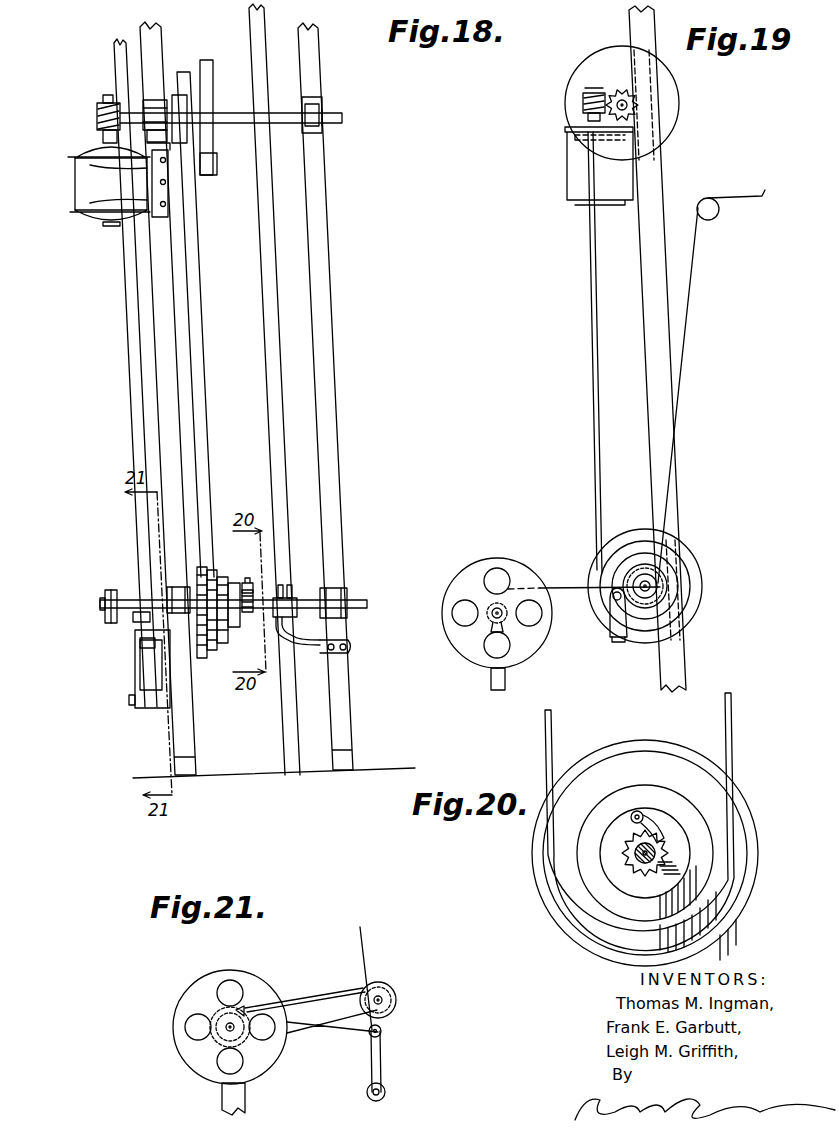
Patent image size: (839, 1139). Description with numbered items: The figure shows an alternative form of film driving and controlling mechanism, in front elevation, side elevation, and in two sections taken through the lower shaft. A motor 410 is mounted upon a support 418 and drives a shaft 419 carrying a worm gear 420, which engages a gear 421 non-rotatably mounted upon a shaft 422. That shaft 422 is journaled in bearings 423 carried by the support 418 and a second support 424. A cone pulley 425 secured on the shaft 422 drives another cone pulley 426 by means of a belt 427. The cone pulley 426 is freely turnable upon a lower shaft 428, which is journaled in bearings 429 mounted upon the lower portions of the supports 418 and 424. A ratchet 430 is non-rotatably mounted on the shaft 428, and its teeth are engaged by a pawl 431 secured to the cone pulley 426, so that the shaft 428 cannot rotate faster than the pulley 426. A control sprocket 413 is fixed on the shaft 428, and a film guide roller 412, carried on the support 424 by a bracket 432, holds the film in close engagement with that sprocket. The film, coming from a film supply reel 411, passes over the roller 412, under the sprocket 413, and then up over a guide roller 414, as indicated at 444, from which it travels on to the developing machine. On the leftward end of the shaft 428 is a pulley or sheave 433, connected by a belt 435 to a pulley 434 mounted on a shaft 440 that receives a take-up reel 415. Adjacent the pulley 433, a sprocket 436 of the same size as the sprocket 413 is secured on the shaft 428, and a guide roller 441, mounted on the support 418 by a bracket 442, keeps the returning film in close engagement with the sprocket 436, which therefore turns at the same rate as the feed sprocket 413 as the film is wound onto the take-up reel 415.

In FIG. 18, the motor 410 is at (93, 182).
In FIG. 19, the film supply reel 411 is at (521, 572).
In FIG. 18, the film guide roller 412 is at (290, 600).
In FIG. 19, the film guide roller 412 is at (608, 600).
In FIG. 19, the control sprocket 413 is at (660, 587).
In FIG. 19, the film guide roller 414 is at (713, 216).
In FIG. 21, the take-up reel 415 is at (185, 1040).
In FIG. 18, the support 418 is at (152, 42).
In FIG. 19, the support 418 is at (640, 36).
In FIG. 18, the shaft 419 is at (102, 137).
In FIG. 18, the worm gear 420 is at (100, 118).
In FIG. 19, the worm gear 420 is at (582, 98).
In FIG. 18, the gear 421 is at (105, 98).
In FIG. 19, the gear 421 is at (608, 62).
In FIG. 18, the shaft 422 is at (345, 116).
In FIG. 19, the shaft 422 is at (628, 103).
In FIG. 18, the bearings 423 is at (156, 116).
In FIG. 18, the support 424 is at (322, 42).
In FIG. 18, the cone pulley 425 is at (212, 160).
In FIG. 19, the cone pulley 425 is at (664, 120).
In FIG. 18, the cone pulley 426 is at (198, 578).
In FIG. 19, the cone pulley 426 is at (700, 569).
In FIG. 20, the cone pulley 426 is at (753, 833).
In FIG. 18, the belt 427 is at (200, 430).
In FIG. 19, the belt 427 is at (595, 497).
In FIG. 20, the belt 427 is at (730, 735).
In FIG. 18, the shaft 428 is at (350, 602).
In FIG. 20, the shaft 428 is at (645, 855).
In FIG. 18, the bearings 429 is at (346, 607).
In FIG. 18, the ratchet 430 is at (248, 615).
In FIG. 20, the ratchet 430 is at (668, 856).
In FIG. 18, the pawl 431 is at (252, 571).
In FIG. 20, the pawl 431 is at (658, 812).
In FIG. 18, the bracket 432 is at (278, 632).
In FIG. 19, the bracket 432 is at (615, 626).
In FIG. 18, the pulley or sheave 433 is at (128, 572).
In FIG. 21, the pulley or sheave 433 is at (399, 984).
In FIG. 21, the pulley 434 is at (256, 1003).
In FIG. 18, the belt 435 is at (108, 595).
In FIG. 21, the belt 435 is at (322, 993).
In FIG. 18, the sprocket 436 is at (136, 620).
In FIG. 21, the sprocket 436 is at (397, 1000).
In FIG. 21, the shaft 440 is at (226, 1025).
In FIG. 18, the guide roller 441 is at (140, 652).
In FIG. 21, the guide roller 441 is at (383, 1032).
In FIG. 18, the bracket 442 is at (136, 684).
In FIG. 21, the bracket 442 is at (387, 1060).
In FIG. 19, the film 444 is at (683, 440).